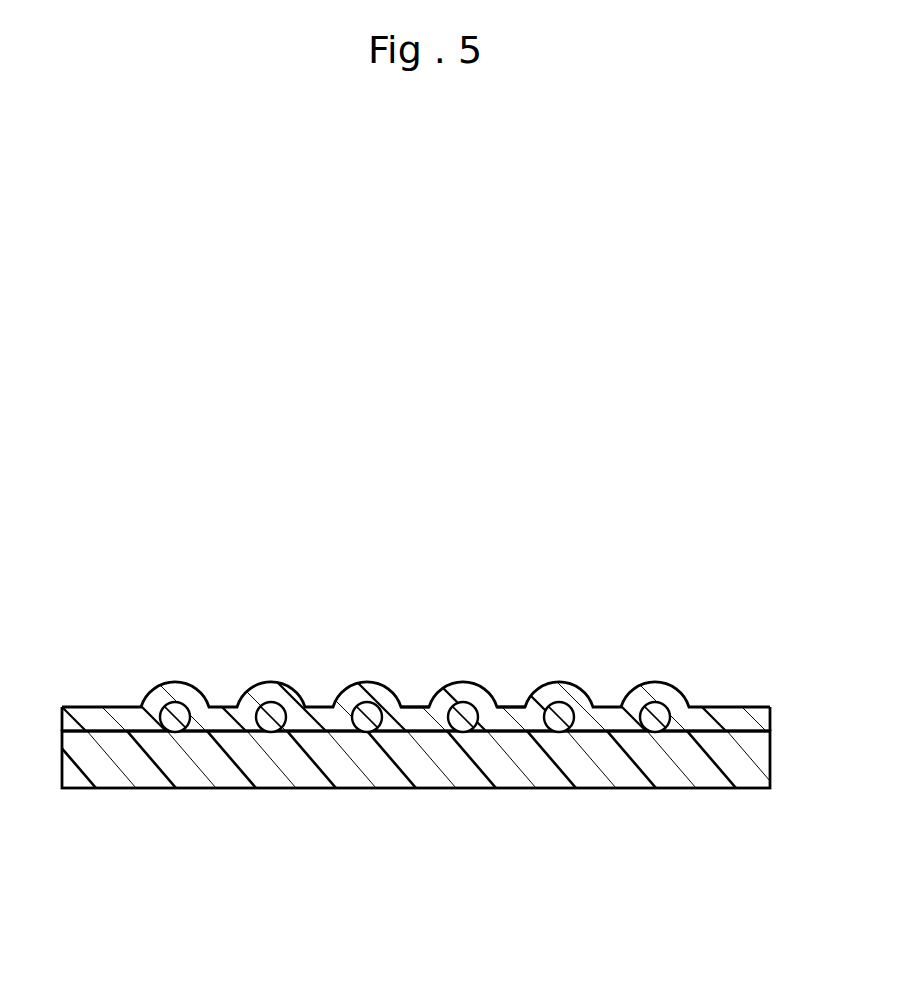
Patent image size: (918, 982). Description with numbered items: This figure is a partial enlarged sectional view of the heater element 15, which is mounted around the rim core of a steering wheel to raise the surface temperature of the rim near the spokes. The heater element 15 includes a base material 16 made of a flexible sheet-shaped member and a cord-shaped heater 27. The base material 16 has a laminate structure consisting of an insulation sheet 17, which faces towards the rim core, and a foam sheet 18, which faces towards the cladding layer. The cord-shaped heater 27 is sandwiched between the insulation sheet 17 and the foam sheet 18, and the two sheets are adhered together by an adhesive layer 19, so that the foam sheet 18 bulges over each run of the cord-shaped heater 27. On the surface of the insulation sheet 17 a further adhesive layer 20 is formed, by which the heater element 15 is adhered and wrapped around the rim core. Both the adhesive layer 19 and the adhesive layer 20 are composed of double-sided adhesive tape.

The heater element 15 is at (417, 678).
The base material 16 is at (417, 645).
The insulation sheet 17 is at (740, 728).
The foam sheet 18 is at (416, 660).
The adhesive layer 19 is at (508, 712).
The adhesive layer 20 is at (441, 789).
The cord-shaped heater 27 is at (361, 707).